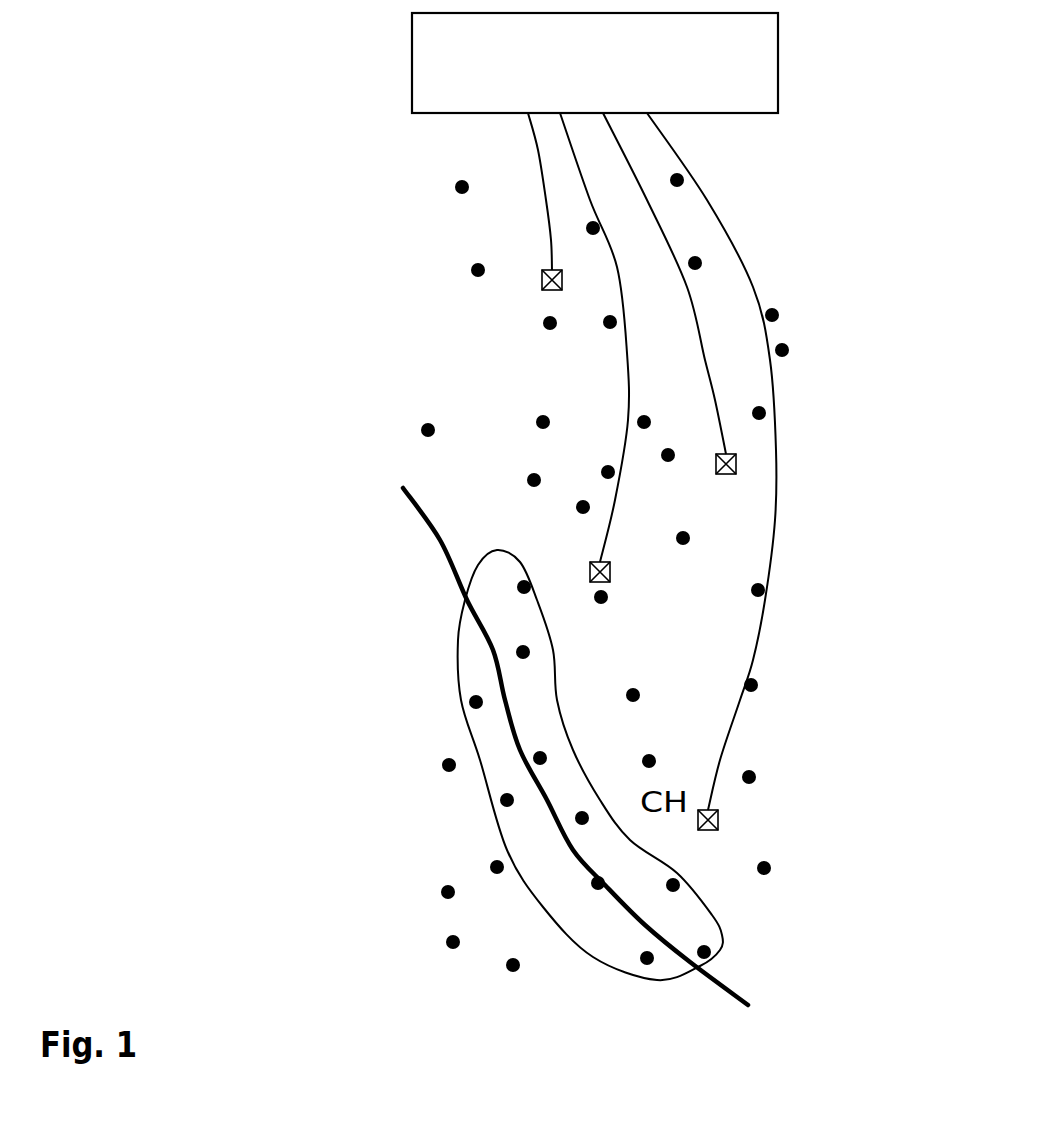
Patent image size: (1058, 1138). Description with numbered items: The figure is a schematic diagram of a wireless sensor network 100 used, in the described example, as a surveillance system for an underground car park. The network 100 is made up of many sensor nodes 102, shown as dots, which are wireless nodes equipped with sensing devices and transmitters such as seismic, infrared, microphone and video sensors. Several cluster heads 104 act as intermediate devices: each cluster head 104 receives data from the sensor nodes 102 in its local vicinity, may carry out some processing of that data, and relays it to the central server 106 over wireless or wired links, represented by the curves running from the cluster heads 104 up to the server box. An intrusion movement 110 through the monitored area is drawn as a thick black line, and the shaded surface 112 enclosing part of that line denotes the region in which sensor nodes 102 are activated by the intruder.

The wireless sensor network 100 is at (383, 838).
The sensor node 102 is at (428, 430).
The cluster head 104 is at (547, 270).
The central server 106 is at (410, 47).
The intrusion movement 110 is at (743, 993).
The shaded surface 112 is at (705, 903).